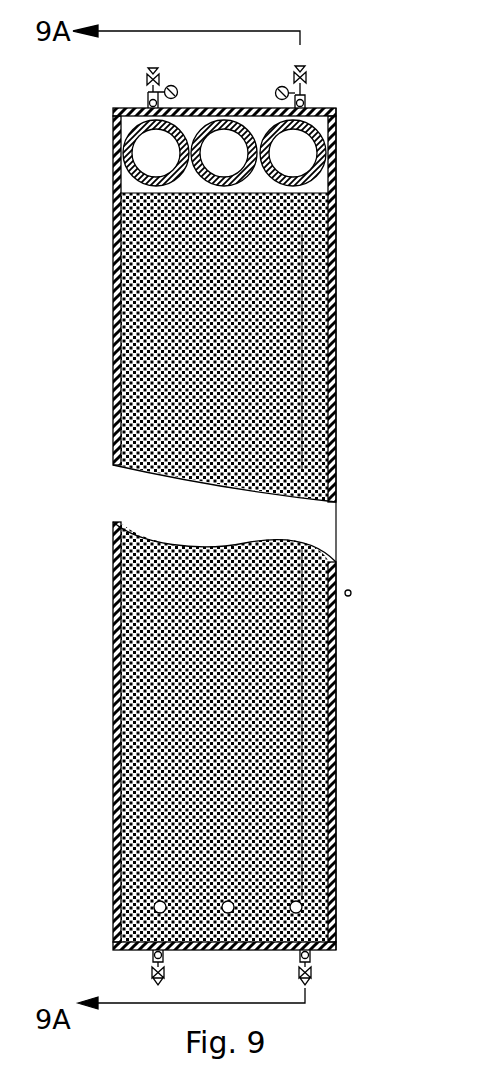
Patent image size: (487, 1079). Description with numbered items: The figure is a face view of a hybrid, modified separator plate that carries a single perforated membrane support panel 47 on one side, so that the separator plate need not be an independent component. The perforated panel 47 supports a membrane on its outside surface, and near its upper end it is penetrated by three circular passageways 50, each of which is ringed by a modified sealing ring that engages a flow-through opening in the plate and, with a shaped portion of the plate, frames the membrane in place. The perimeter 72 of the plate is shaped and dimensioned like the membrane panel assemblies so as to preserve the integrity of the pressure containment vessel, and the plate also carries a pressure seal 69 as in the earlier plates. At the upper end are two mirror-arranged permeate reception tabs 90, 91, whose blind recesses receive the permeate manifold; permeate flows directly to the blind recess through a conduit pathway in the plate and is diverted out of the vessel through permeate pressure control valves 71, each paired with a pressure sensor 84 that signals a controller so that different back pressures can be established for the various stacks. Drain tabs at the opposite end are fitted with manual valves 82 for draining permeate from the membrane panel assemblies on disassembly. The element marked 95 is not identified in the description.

The perforated panel 47 is at (302, 630).
The circular passageways 50 is at (290, 162).
The pressure seal 69 is at (232, 905).
The permeate pressure control valve 71 is at (304, 78).
The perimeter 72 is at (336, 430).
The manual valve 82 is at (312, 975).
The pressure sensor 84 is at (282, 86).
The permeate reception tab 90 is at (304, 101).
The permeate reception tab 91 is at (309, 954).
The sensor 95 is at (351, 593).